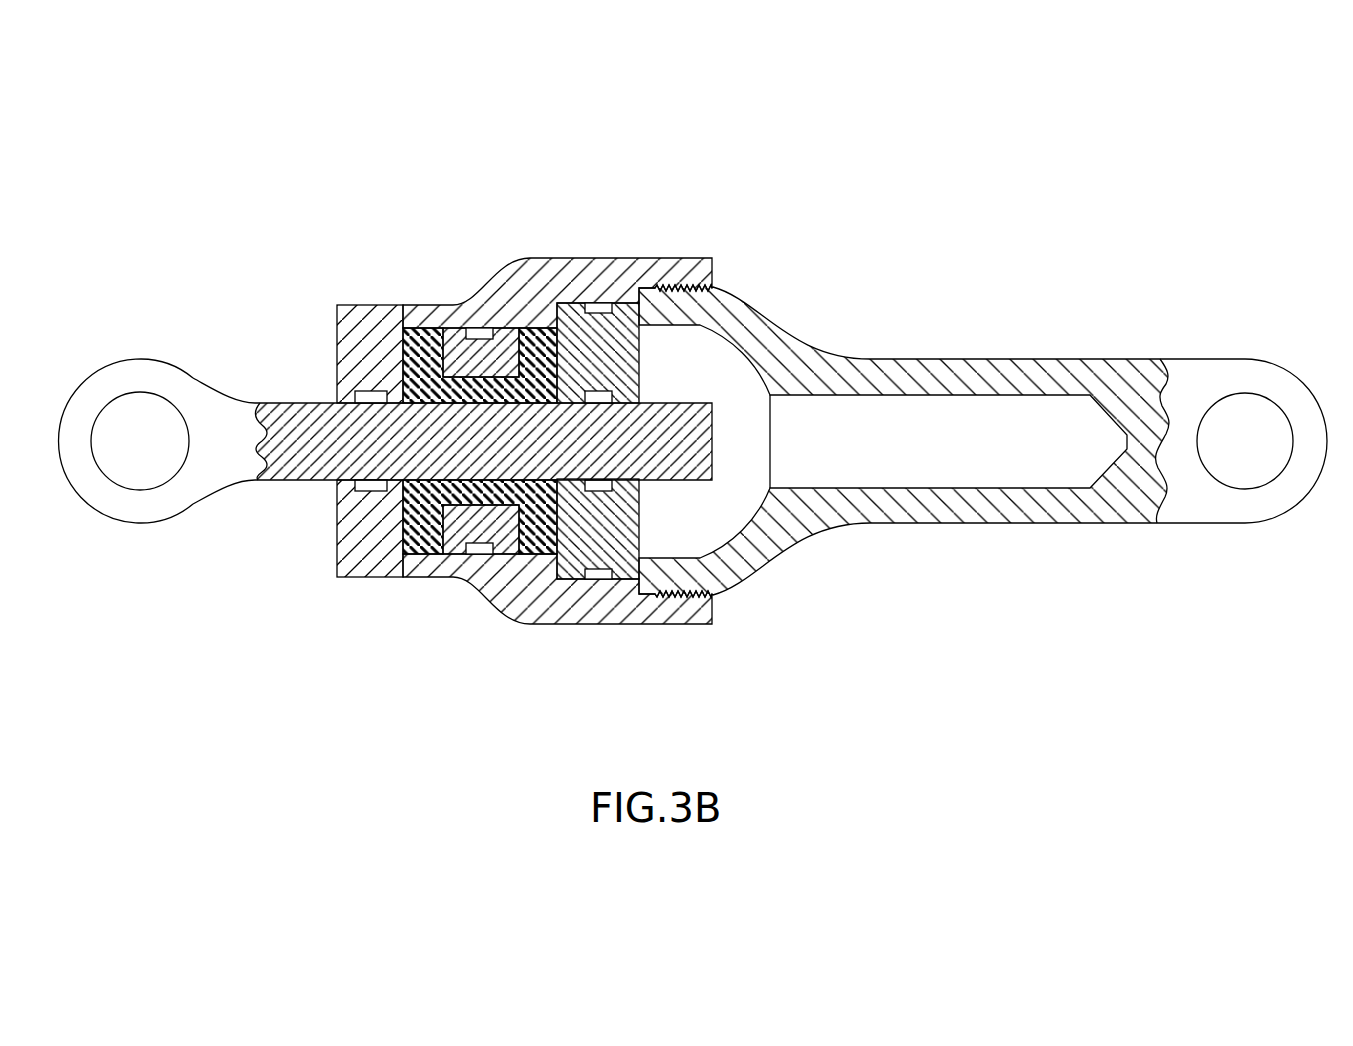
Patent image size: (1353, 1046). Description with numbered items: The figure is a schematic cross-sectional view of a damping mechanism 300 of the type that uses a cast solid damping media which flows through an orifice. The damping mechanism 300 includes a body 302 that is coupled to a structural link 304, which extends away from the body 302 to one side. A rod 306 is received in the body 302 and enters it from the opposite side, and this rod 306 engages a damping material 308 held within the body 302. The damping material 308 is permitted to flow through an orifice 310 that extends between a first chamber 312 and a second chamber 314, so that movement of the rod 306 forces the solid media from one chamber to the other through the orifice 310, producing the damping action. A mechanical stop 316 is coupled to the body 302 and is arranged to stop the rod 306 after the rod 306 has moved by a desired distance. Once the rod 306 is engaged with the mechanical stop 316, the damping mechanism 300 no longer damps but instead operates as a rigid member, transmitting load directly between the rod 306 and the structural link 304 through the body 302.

The damping mechanism 300 is at (417, 140).
The body 302 is at (565, 258).
The structural link 304 is at (970, 359).
The rod 306 is at (313, 403).
The damping material 308 is at (421, 363).
The orifice 310 is at (458, 505).
The first chamber 312 is at (415, 520).
The second chamber 314 is at (540, 523).
The mechanical stop 316 is at (640, 512).